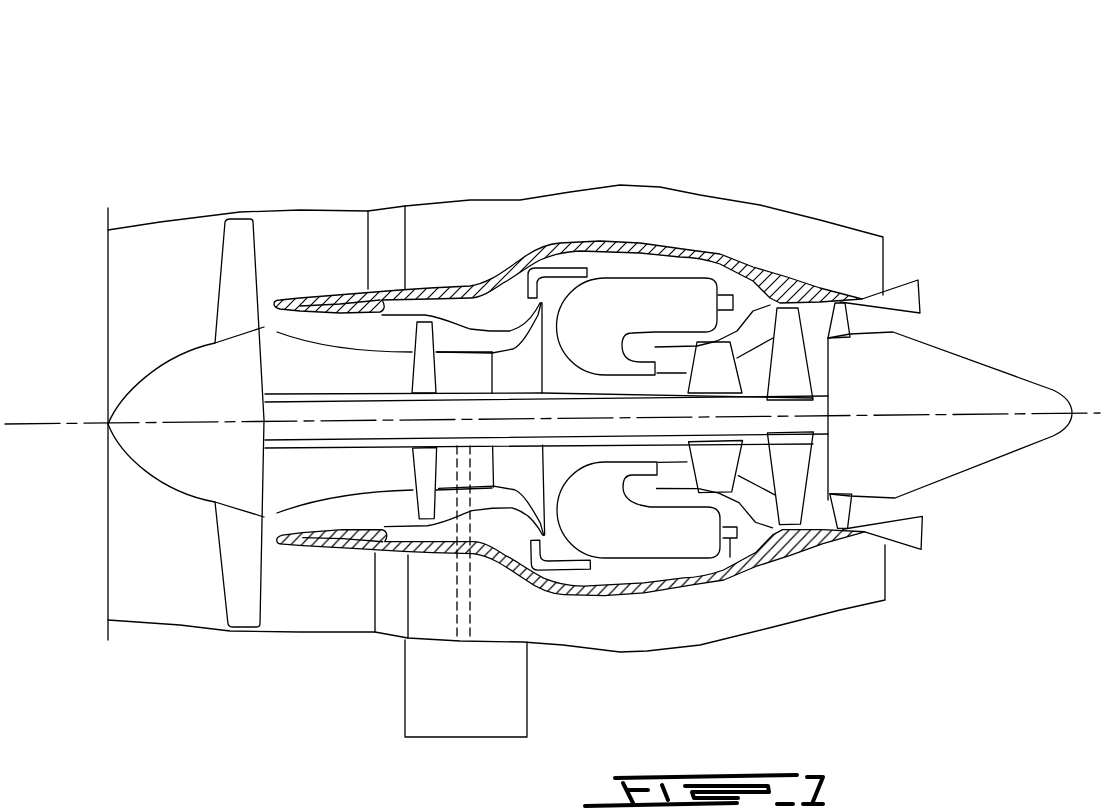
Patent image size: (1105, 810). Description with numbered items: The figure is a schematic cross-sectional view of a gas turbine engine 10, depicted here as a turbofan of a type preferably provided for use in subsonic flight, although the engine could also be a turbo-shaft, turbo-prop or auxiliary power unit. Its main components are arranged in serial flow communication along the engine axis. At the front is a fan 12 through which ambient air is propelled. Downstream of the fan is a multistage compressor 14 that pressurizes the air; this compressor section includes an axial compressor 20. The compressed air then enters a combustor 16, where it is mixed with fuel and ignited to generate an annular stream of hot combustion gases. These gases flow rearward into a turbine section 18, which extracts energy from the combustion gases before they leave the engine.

The gas turbine engine 10 is at (912, 140).
The fan 12 is at (238, 555).
The multistage compressor 14 is at (471, 340).
The combustor 16 is at (627, 303).
The turbine section 18 is at (758, 463).
The axial compressor 20 is at (421, 318).